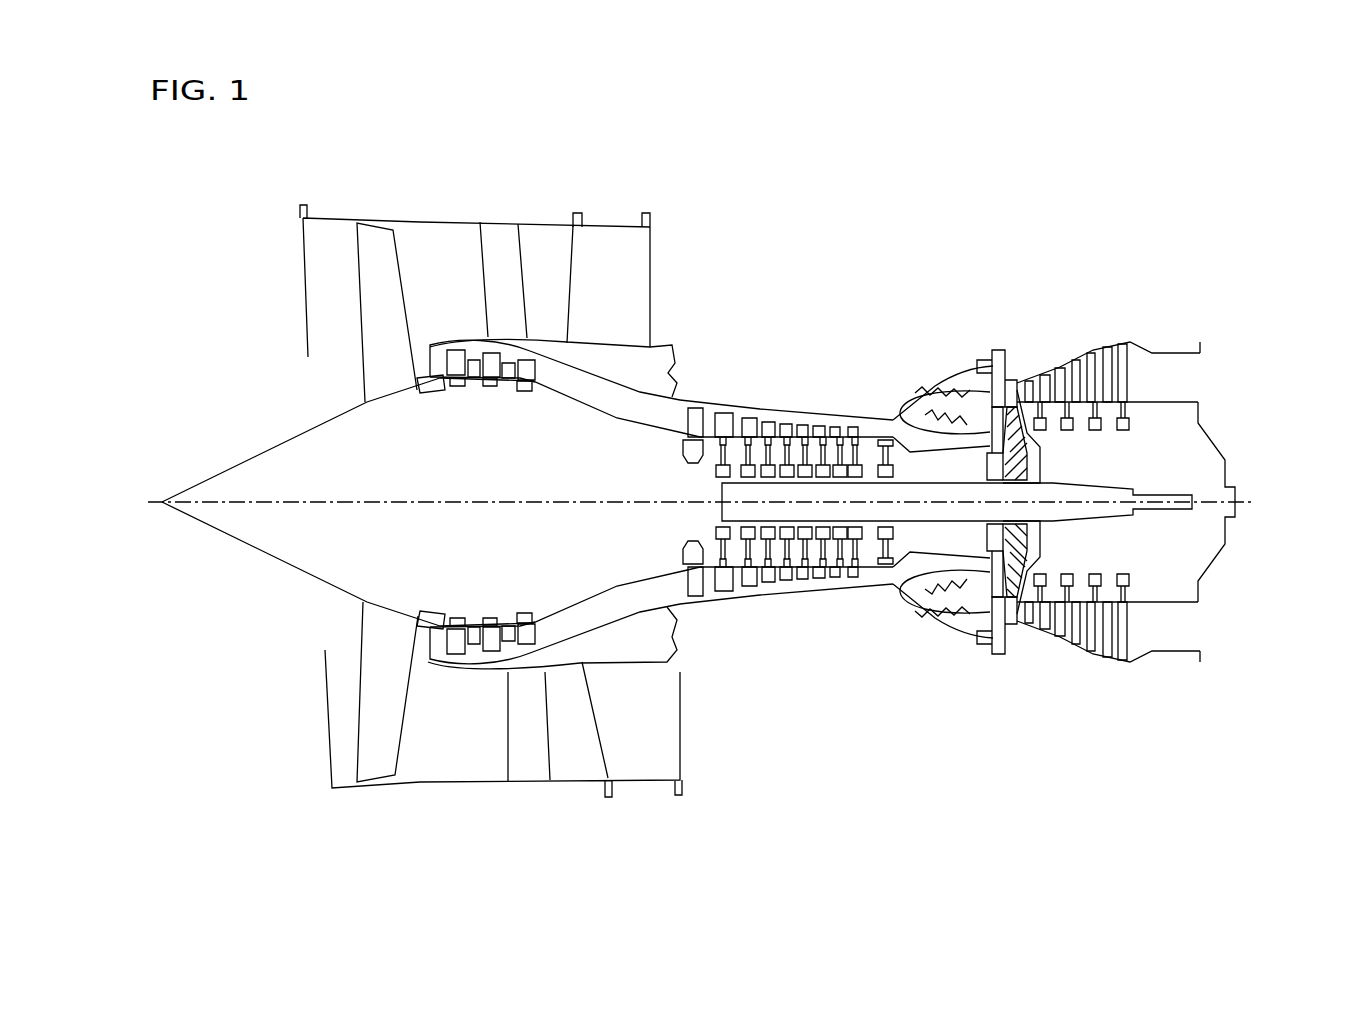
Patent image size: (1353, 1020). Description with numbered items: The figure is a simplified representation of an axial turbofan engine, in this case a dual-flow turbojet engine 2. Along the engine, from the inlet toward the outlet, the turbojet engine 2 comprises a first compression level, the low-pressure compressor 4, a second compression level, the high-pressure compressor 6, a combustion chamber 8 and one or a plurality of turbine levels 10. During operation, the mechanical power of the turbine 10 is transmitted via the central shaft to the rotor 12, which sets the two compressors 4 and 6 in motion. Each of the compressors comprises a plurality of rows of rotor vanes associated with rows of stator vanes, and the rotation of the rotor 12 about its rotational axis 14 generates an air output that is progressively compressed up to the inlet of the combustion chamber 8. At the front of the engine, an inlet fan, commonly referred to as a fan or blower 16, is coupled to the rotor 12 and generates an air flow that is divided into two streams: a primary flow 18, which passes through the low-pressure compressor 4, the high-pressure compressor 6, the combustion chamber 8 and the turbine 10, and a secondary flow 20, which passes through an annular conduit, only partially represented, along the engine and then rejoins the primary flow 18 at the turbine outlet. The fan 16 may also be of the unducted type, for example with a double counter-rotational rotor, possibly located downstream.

The turbojet engine 2 is at (929, 249).
The low-pressure compressor 4 is at (450, 383).
The high-pressure compressor 6 is at (735, 410).
The combustion chamber 8 is at (915, 422).
The turbine 10 is at (1102, 383).
The rotor 12 is at (266, 540).
The rotational axis 14 is at (497, 503).
The fan 16 is at (380, 303).
The primary flow 18 is at (540, 368).
The secondary flow 20 is at (650, 270).